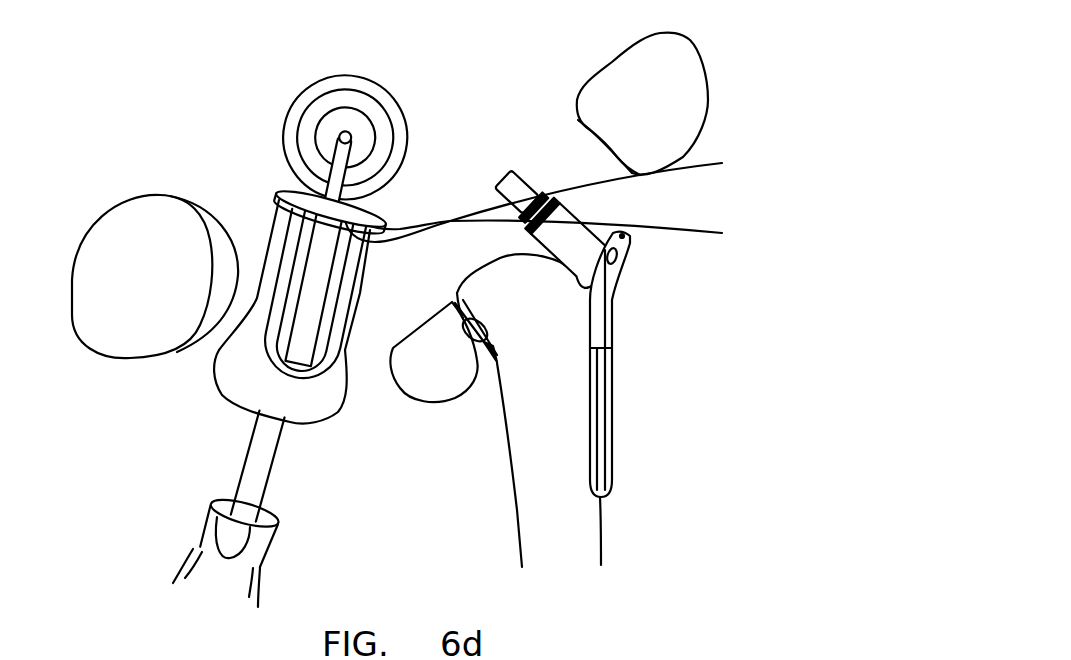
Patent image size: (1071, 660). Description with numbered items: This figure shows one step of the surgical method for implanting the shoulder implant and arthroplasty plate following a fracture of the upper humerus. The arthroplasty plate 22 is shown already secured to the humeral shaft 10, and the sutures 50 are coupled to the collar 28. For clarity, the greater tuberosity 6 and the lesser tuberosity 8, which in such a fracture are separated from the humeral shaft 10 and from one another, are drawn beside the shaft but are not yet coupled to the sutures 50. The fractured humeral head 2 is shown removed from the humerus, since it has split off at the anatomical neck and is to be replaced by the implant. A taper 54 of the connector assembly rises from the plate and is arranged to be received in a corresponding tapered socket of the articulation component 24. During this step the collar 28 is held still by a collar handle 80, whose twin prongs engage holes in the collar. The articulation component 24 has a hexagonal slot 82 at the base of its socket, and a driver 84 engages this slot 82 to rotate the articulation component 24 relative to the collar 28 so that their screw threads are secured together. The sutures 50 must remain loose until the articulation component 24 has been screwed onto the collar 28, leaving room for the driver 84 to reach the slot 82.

The humeral head 2 is at (141, 243).
The greater tuberosity 6 is at (675, 75).
The lesser tuberosity 8 is at (430, 377).
The humeral shaft 10 is at (557, 457).
The arthroplasty plate 22 is at (608, 317).
The articulation component 24 is at (310, 93).
The collar 28 is at (295, 187).
The sutures 50 is at (705, 163).
The taper 54 is at (510, 183).
The collar handle 80 is at (235, 368).
The hexagonal slot 82 is at (348, 132).
The driver 84 is at (260, 457).